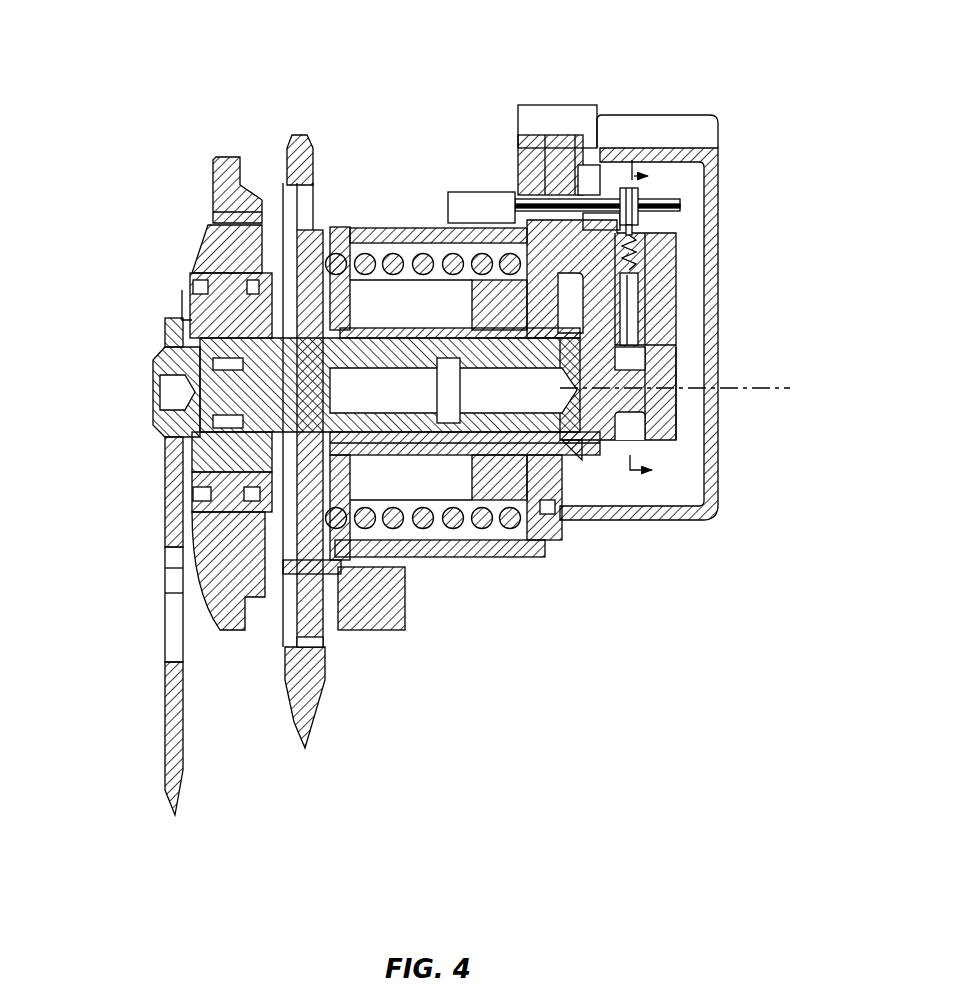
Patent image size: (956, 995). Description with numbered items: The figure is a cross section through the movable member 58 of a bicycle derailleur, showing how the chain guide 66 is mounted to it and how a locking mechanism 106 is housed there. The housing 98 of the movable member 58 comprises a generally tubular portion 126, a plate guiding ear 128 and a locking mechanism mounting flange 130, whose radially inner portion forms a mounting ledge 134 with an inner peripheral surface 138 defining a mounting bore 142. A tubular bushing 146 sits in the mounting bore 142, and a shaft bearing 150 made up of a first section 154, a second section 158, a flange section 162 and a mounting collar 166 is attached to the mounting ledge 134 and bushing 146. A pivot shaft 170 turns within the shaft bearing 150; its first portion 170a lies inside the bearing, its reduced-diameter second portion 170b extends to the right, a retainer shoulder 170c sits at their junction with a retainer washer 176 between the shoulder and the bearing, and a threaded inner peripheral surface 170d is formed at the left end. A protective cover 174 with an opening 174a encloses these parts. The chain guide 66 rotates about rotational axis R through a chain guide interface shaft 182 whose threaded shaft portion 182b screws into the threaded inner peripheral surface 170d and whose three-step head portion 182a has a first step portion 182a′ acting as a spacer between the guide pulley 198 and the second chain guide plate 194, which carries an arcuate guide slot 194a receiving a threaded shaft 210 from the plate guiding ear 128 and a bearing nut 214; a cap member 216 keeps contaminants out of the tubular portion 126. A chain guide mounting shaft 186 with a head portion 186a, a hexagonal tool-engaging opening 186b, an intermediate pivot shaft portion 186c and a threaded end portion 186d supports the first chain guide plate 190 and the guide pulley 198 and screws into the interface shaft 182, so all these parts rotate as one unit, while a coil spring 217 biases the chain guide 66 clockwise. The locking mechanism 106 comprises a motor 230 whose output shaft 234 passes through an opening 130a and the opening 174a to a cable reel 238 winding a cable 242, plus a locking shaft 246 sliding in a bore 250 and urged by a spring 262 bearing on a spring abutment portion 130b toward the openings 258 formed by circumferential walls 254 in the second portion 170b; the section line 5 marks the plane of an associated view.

The movable member 58 is at (452, 68).
The chain guide 66 is at (100, 514).
The housing 98 is at (518, 636).
The locking mechanism 106 is at (694, 274).
The tubular portion 126 is at (342, 232).
The plate guiding ear 128 is at (405, 570).
The locking mechanism mounting flange 130 is at (525, 150).
The opening 130a is at (552, 140).
The spring abutment portion 130b is at (652, 242).
The mounting ledge 134 is at (490, 470).
The inner peripheral surface 138 is at (532, 527).
The mounting bore 142 is at (527, 400).
The tubular bushing 146 is at (478, 285).
The shaft bearing 150 is at (447, 456).
The first section 154 is at (398, 270).
The second section 158 is at (520, 190).
The flange section 162 is at (460, 290).
The mounting collar 166 is at (520, 215).
The pivot shaft 170 is at (684, 362).
The first portion 170a is at (565, 448).
The second portion 170b is at (590, 445).
The retainer shoulder 170c is at (578, 448).
The threaded inner peripheral surface 170d is at (375, 330).
The protective cover 174 is at (696, 125).
The opening 174a is at (590, 150).
The retainer washer 176 is at (598, 445).
The chain guide interface shaft 182 is at (285, 462).
The head portion 182a is at (270, 340).
The first step portion 182a′ is at (280, 330).
The threaded shaft portion 182b is at (305, 275).
The chain guide mounting shaft 186 is at (200, 360).
The head portion 186a is at (180, 366).
The hexagonal tool-engaging opening 186b is at (175, 394).
The intermediate pivot shaft portion 186c is at (178, 411).
The threaded end portion 186d is at (225, 427).
The first chain guide plate 190 is at (166, 712).
The second chain guide plate 194 is at (302, 742).
The arcuate guide slot 194a is at (326, 648).
The guide pulley 198 is at (200, 290).
The threaded shaft 210 is at (326, 600).
The bearing nut 214 is at (290, 652).
The cap member 216 is at (330, 355).
The coil spring 217 is at (385, 300).
The motor 230 is at (483, 192).
The output shaft 234 is at (600, 199).
The cable reel 238 is at (626, 188).
The cable 242 is at (640, 216).
The locking shaft 246 is at (656, 322).
The bore 250 is at (638, 252).
The circumferential walls 254 is at (642, 500).
The openings 258 is at (634, 427).
The spring 262 is at (634, 302).
The section line 5- 5 is at (650, 321).
The rotational axis R is at (680, 376).